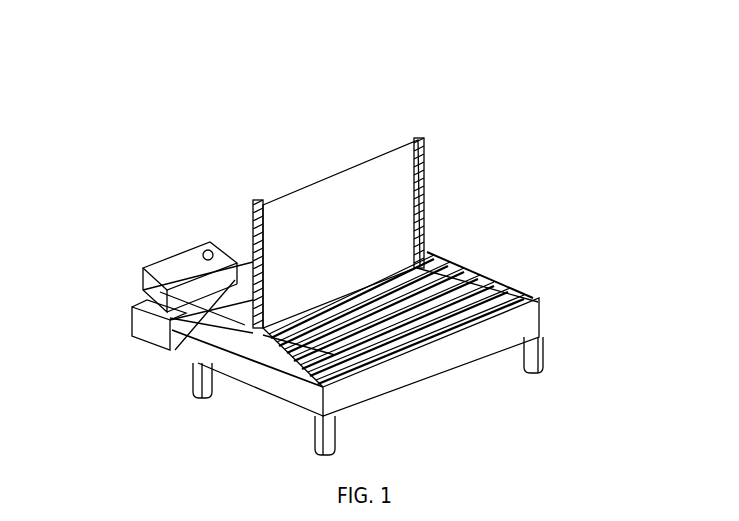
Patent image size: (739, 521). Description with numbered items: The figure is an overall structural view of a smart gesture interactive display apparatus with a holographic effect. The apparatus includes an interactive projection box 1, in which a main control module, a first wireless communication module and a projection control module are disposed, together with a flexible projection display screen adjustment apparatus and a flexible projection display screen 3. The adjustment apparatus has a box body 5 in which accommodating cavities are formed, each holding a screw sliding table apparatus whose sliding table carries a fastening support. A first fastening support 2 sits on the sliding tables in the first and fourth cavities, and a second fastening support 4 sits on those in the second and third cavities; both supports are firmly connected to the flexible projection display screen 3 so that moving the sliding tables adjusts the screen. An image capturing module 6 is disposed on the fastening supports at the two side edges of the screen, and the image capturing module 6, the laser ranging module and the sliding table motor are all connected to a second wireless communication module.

The interactive projection box 1 is at (158, 253).
The first fastening support 2 is at (247, 196).
The flexible projection display screen 3 is at (366, 176).
The second fastening support 4 is at (380, 266).
The box body 5 is at (516, 324).
The image capturing module 6 is at (250, 298).